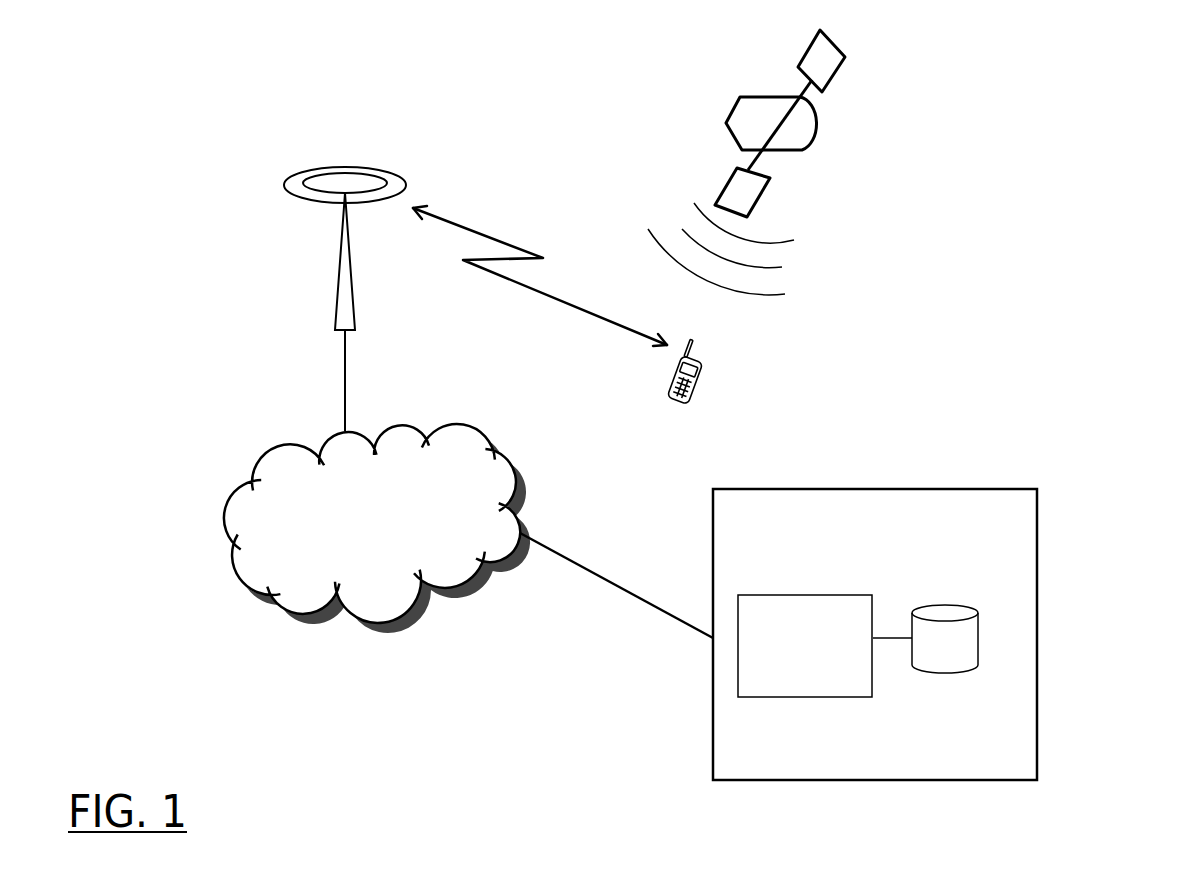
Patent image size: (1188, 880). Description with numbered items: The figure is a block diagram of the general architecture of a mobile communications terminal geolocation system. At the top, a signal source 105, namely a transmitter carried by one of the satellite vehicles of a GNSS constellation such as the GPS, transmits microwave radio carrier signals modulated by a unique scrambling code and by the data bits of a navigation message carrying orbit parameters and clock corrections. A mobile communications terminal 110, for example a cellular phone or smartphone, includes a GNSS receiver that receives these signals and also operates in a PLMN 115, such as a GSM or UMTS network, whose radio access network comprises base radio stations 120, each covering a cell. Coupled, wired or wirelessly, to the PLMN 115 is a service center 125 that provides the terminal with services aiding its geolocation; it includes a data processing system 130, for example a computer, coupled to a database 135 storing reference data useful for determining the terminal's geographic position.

The signal source 105 is at (820, 122).
The mobile communications terminal 110 is at (702, 378).
The PLMN 115 is at (358, 514).
The base radio station 120 is at (337, 303).
The service center 125 is at (1037, 623).
The data processing system 130 is at (788, 697).
The database 135 is at (933, 603).